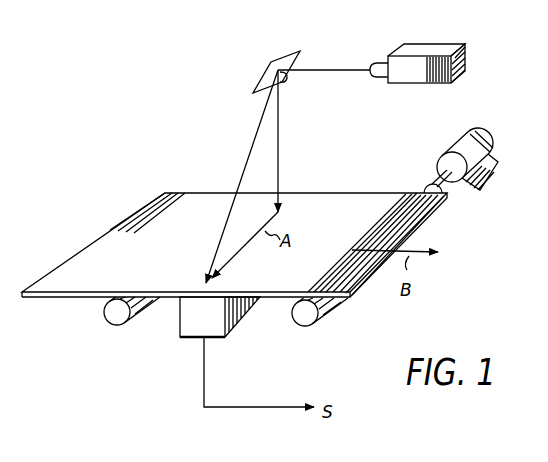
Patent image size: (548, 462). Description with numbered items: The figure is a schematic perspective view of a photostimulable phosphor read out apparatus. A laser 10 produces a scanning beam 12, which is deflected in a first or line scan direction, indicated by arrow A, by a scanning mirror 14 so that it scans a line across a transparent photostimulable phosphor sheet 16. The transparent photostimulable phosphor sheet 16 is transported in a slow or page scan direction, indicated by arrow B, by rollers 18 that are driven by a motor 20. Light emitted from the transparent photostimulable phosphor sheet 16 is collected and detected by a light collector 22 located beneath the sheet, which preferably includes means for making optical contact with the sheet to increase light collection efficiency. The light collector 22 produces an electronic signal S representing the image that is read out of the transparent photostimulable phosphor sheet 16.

The laser 10 is at (418, 50).
The scanning beam 12 is at (335, 65).
The scanning mirror 14 is at (255, 88).
The transparent photostimulable phosphor sheet 16 is at (200, 199).
The rollers 18 is at (112, 310).
The motor 20 is at (477, 121).
The light collector 22 is at (183, 330).